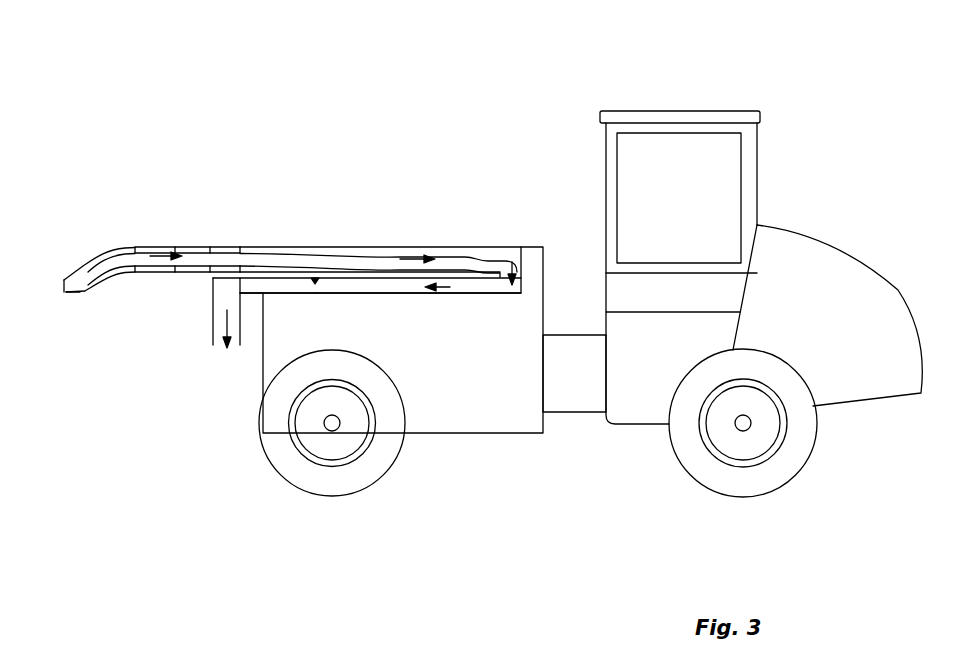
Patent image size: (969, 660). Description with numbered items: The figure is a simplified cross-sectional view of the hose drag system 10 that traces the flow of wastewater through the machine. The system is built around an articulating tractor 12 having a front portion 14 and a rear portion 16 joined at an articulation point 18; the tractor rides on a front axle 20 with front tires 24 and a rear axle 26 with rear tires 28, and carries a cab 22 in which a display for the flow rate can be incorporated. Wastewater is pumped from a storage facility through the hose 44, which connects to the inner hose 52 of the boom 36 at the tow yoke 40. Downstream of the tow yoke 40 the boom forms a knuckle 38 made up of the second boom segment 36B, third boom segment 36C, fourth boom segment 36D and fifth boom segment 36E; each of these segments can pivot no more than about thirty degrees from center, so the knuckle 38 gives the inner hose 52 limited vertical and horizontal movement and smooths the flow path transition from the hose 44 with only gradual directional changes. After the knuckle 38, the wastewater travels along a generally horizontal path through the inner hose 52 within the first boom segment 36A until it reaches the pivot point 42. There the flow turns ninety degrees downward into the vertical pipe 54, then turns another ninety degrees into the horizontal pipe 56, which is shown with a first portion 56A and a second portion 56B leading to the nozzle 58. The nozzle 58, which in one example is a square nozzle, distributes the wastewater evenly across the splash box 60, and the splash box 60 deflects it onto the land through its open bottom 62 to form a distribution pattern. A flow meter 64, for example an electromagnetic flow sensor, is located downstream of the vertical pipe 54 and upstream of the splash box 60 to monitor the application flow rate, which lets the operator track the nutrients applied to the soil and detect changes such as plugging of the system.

The hose drag system 10 is at (433, 127).
The articulating tractor 12 is at (833, 228).
The front portion 14 is at (847, 417).
The rear portion 16 is at (462, 443).
The articulation point 18 is at (565, 413).
The front axle 20 is at (737, 420).
The cab 22 is at (668, 111).
The front tires 24 is at (747, 478).
The rear axle 26 is at (327, 423).
The rear tires 28 is at (300, 468).
The boom 36 is at (448, 243).
The first boom segment 36A is at (257, 247).
The second boom segment 36B is at (220, 247).
The third boom segment 36C is at (175, 247).
The fourth boom segment 36D is at (125, 247).
The fifth boom segment 36E is at (83, 263).
The knuckle 38 is at (175, 113).
The tow yoke 40 is at (62, 266).
The pivot point 42 is at (502, 247).
The hose 44 is at (72, 293).
The inner hose 52 is at (387, 253).
The vertical pipe 54 is at (523, 264).
The horizontal pipe 56 is at (428, 297).
The first portion 56A is at (380, 294).
The second portion 56B is at (273, 295).
The nozzle 58 is at (238, 291).
The splash box 60 is at (212, 323).
The open bottom 62 is at (232, 348).
The flow meter 64 is at (315, 283).